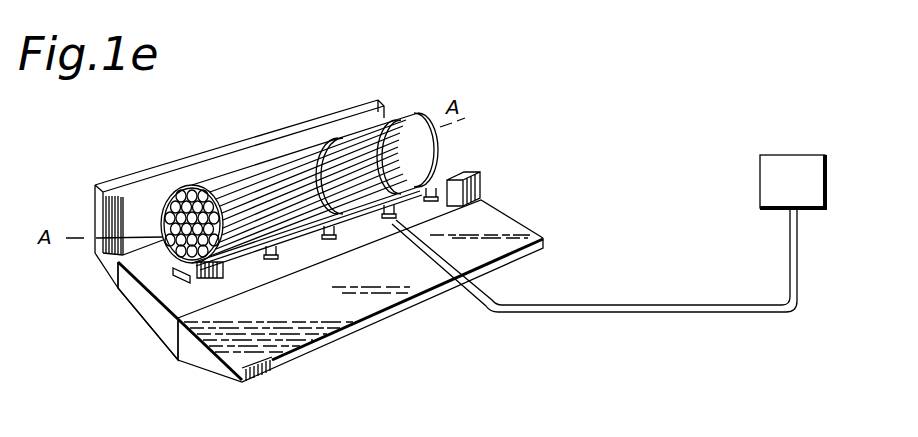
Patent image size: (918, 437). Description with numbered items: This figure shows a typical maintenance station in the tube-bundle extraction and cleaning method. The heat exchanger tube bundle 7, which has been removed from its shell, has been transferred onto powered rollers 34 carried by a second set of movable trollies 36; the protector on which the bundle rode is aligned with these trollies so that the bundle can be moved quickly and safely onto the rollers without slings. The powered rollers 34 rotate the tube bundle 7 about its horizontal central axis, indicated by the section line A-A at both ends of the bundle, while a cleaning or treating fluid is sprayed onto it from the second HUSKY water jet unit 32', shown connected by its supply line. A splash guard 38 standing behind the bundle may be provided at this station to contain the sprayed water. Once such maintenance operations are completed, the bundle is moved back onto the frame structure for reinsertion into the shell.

The heat exchanger tube bundle 7 is at (280, 158).
The splash guard 38 is at (98, 196).
The second set of movable trollies 36 is at (446, 178).
The powered rollers 34 is at (276, 250).
The second HUSKY water jet unit 32' is at (608, 216).